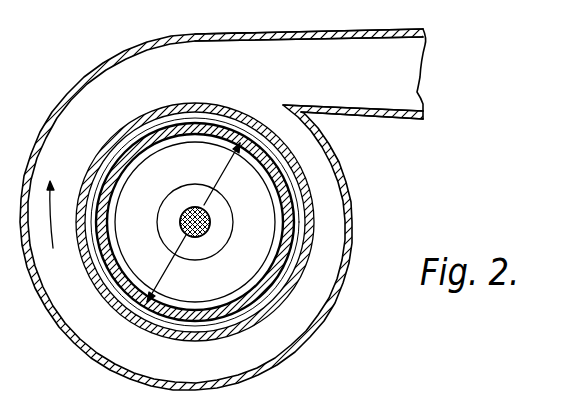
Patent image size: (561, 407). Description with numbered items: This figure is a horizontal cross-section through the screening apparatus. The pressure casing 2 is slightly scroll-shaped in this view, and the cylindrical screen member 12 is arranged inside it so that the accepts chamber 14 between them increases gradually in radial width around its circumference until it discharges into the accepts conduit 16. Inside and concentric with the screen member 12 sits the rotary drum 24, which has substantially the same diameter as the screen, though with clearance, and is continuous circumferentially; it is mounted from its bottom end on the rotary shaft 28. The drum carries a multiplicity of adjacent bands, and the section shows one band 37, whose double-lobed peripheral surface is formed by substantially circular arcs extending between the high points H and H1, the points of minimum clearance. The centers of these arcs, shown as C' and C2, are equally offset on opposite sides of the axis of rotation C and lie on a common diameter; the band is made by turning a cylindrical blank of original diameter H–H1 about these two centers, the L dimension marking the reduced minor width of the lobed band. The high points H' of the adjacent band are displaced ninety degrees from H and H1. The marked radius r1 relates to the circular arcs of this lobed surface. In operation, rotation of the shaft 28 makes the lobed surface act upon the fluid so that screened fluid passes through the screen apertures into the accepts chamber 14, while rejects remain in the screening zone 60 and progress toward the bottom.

The pressure casing 2 is at (83, 381).
The screen member 12 is at (280, 209).
The accepts chamber 14 is at (280, 213).
The accepts conduit 16 is at (413, 57).
The rotary drum 24 is at (274, 238).
The rotary shaft 28 is at (181, 197).
The lobed band 37 is at (244, 222).
The screening zone 60 is at (274, 238).
The high point H is at (244, 226).
The high point of adjacent band H' is at (244, 254).
The high point H1 is at (193, 322).
The low point L is at (98, 162).
The axis of rotation C is at (189, 246).
The offset arc center C' is at (189, 246).
The offset arc center C2 is at (208, 231).
The radius r1 is at (193, 222).